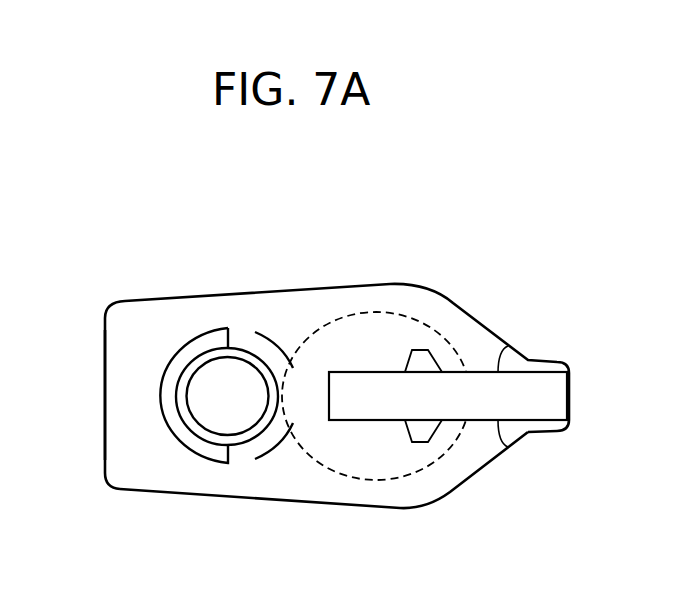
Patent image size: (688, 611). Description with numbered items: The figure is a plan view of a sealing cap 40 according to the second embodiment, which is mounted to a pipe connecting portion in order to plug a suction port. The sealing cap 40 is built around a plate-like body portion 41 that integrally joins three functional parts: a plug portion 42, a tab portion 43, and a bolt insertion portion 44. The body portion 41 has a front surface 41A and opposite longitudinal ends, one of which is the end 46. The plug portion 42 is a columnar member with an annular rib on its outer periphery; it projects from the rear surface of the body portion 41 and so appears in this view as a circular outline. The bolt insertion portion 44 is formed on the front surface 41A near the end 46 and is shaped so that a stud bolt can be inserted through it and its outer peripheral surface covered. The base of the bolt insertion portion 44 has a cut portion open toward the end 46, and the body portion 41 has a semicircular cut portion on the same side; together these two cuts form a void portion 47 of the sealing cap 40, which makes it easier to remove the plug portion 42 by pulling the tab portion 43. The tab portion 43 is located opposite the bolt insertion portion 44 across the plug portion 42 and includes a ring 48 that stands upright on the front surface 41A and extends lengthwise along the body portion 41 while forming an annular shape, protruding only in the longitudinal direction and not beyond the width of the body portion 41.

The sealing cap 40 is at (495, 248).
The plate-like body portion 41 is at (293, 287).
The front surface 41A is at (303, 482).
The plug portion 42 is at (452, 450).
The tab portion 43 is at (386, 424).
The bolt insertion portion 44 is at (242, 348).
The end 46 is at (105, 395).
The void portion 47 is at (193, 440).
The ring 48 is at (375, 397).